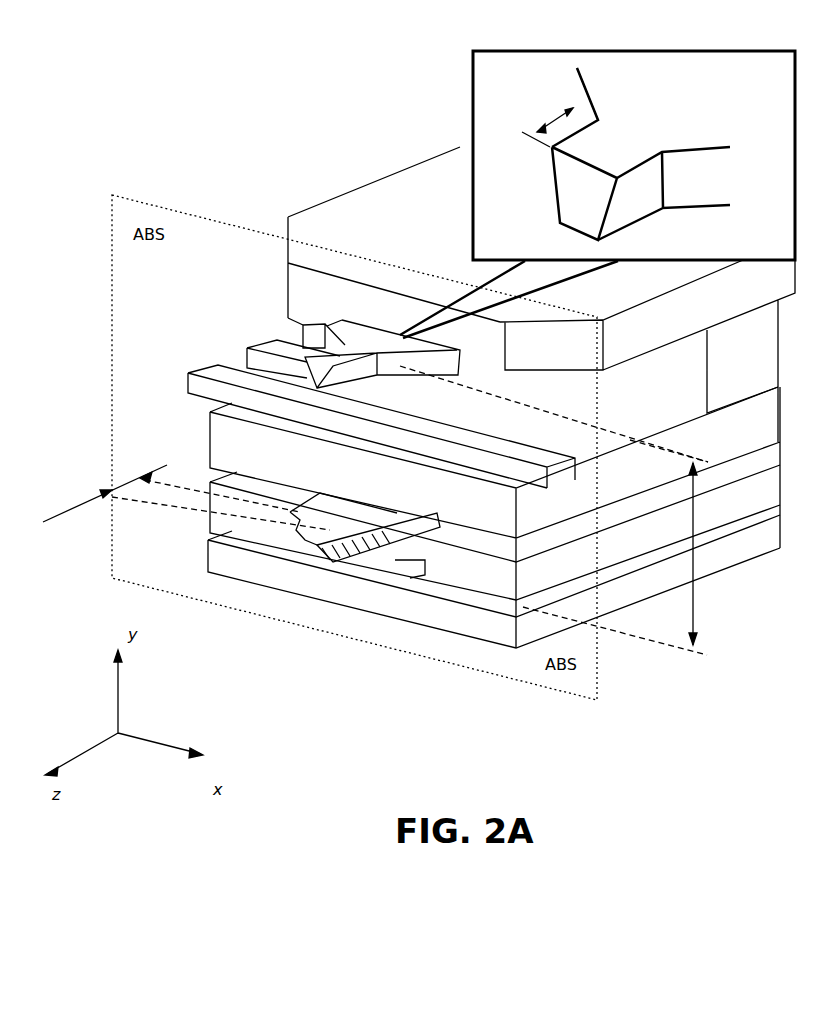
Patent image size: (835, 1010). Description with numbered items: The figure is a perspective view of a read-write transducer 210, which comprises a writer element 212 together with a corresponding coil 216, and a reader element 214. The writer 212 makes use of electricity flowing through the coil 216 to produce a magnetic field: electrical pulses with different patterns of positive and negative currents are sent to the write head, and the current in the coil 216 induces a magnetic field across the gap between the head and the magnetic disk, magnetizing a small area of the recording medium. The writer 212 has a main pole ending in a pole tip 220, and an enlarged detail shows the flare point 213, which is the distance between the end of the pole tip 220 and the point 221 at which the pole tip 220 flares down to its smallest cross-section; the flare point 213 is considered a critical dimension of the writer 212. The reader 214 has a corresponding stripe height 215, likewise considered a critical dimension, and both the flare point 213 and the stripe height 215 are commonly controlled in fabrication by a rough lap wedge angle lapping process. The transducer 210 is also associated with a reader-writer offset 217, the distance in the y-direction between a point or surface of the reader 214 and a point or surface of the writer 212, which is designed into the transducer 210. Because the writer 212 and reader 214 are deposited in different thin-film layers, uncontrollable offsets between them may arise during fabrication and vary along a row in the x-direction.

The read-write transducer 210 is at (192, 58).
The writer element 212 is at (327, 338).
The flare point 213 is at (562, 113).
The reader element 214 is at (345, 558).
The stripe height 215 is at (130, 500).
The coil 216 is at (248, 333).
The reader-writer offset 217 is at (697, 603).
The pole tip 220 is at (633, 210).
The point at which the pole tip flares 221 is at (667, 177).